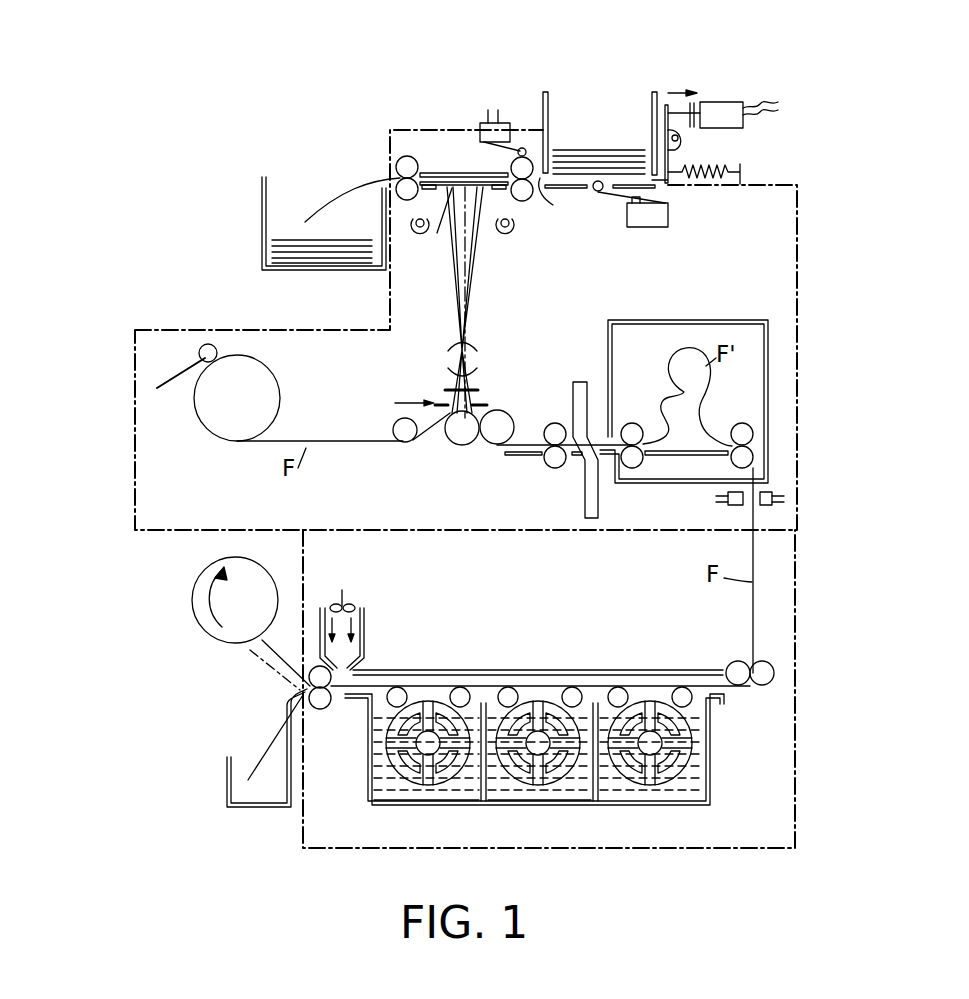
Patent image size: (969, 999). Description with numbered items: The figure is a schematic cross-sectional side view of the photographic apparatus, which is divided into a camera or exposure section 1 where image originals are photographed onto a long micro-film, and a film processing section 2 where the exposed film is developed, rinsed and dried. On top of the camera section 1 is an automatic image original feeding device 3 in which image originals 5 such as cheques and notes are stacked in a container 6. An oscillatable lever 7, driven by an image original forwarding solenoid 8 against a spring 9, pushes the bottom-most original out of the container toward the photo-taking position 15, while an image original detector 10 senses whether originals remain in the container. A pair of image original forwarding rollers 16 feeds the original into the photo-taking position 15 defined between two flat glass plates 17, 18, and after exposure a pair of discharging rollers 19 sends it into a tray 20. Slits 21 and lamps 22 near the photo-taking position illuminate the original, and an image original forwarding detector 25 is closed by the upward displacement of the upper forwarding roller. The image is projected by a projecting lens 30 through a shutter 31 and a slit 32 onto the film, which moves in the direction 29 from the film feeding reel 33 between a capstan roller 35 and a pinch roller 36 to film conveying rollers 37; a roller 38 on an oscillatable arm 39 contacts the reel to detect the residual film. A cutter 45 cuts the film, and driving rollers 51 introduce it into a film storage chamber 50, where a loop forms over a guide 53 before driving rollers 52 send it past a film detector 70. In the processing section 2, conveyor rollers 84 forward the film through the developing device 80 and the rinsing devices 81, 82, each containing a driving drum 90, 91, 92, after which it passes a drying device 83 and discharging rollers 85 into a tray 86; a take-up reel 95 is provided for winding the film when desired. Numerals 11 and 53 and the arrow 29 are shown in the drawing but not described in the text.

The camera section 1 is at (800, 199).
The film processing section 2 is at (796, 766).
The automatic image original feeding device 3 is at (621, 96).
The image originals 5 is at (586, 150).
The container 6 is at (545, 90).
The oscillatable lever 7 is at (674, 158).
The image original forwarding solenoid 8 is at (726, 102).
The spring 9 is at (722, 170).
The image original detector 10 is at (640, 228).
The feed roller 11 is at (602, 199).
The photo-taking position 15 is at (465, 162).
The image original forwarding rollers 16 is at (528, 200).
The flat glass plate 17 is at (436, 222).
The flat glass plate 18 is at (428, 173).
The discharging rollers 19 is at (407, 155).
The tray 20 is at (306, 195).
The slits 21 is at (432, 190).
The lamps 22 is at (417, 233).
The image original forwarding detector 25 is at (506, 121).
The film feed direction 29 is at (398, 403).
The projecting lens 30 is at (480, 357).
The shutter 31 is at (445, 390).
The slit 32 is at (482, 404).
The film feeding reel 33 is at (272, 382).
The capstan roller 35 is at (450, 442).
The pinch roller 36 is at (496, 448).
The film conveying rollers 37 is at (553, 470).
The roller 38 is at (208, 343).
The oscillatable arm 39 is at (180, 382).
The cutter 45 is at (580, 384).
The film storage chamber 50 is at (706, 333).
The driving rollers 51 is at (632, 422).
The driving rollers 52 is at (742, 422).
The guide plate 53 is at (668, 458).
The film detector 70 is at (740, 506).
The developing device 80 is at (689, 796).
The rinsing device 81 is at (583, 796).
The rinsing device 82 is at (465, 796).
The drying device 83 is at (362, 613).
The conveyor rollers 84 is at (763, 687).
The discharging rollers 85 is at (325, 709).
The tray 86 is at (244, 797).
The driving drum 90 is at (652, 700).
The driving drum 91 is at (540, 700).
The driving drum 92 is at (431, 700).
The take-up reel 95 is at (194, 616).